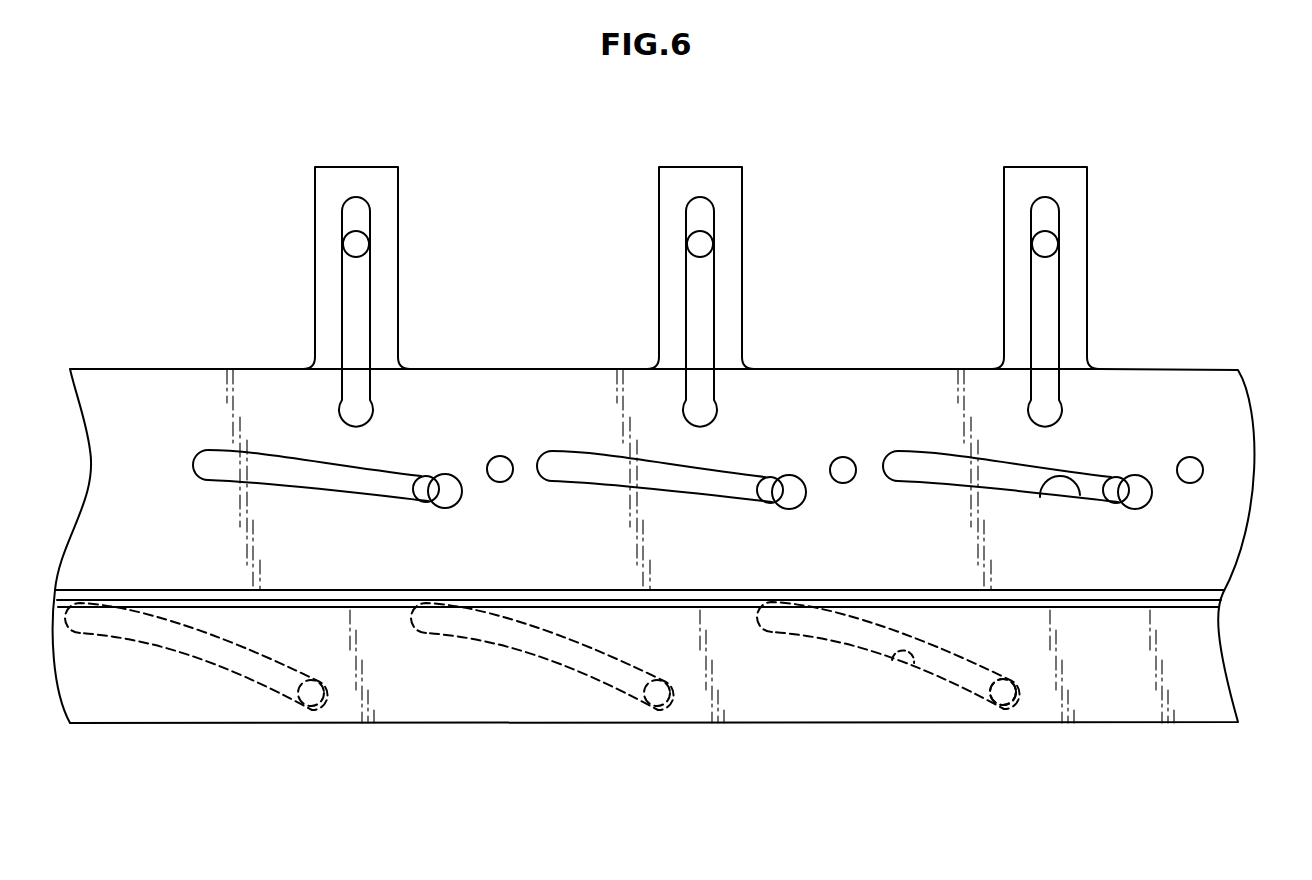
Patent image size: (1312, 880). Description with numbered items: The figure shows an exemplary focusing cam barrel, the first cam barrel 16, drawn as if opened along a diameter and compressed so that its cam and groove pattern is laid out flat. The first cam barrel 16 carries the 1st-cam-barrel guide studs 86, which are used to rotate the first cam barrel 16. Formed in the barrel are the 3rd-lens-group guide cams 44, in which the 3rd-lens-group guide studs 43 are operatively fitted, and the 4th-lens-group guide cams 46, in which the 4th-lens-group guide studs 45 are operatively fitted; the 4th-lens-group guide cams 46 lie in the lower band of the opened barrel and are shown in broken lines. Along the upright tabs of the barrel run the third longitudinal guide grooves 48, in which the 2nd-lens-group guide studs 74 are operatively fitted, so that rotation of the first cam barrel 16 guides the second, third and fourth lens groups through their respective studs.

The first cam barrel 16 is at (1208, 369).
The 3rd-lens-group guide stud 43 is at (1120, 490).
The 3rd-lens-group guide cam 44 is at (1080, 495).
The 4th-lens-group guide stud 45 is at (1015, 708).
The 4th-lens-group guide cam 46 is at (887, 662).
The third longitudinal guide groove 48 is at (1038, 319).
The 2nd-lens-group guide stud 74 is at (1058, 246).
The 1st-cam-barrel guide stud 86 is at (846, 456).